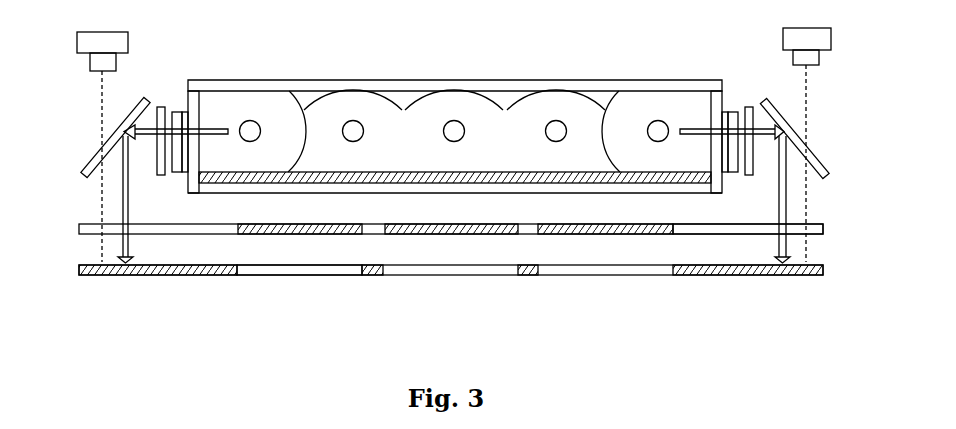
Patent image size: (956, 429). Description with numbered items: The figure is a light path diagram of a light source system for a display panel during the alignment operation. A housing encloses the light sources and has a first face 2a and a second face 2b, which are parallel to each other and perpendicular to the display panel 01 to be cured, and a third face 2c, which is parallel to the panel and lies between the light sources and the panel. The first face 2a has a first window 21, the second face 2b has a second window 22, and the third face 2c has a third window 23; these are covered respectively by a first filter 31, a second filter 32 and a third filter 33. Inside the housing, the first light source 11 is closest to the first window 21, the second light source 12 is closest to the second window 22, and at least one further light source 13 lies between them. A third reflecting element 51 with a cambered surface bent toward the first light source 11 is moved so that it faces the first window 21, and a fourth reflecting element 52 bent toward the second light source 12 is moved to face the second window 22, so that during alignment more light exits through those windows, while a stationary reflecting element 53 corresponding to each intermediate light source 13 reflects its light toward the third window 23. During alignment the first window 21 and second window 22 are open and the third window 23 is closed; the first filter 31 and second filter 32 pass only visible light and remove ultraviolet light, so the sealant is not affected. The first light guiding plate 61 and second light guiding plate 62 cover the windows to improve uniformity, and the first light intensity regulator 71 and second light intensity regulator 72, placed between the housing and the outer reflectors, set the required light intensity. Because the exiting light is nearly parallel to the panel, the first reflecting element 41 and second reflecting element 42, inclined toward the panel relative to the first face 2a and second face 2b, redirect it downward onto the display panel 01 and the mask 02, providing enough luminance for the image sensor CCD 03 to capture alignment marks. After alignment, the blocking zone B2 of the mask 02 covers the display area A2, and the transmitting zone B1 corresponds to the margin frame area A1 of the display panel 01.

The image sensor CCD 03 is at (88, 42).
The first face 2a is at (188, 100).
The second face 2b is at (722, 97).
The third face 2c is at (498, 183).
The first light source 11 is at (247, 124).
The second light source 12 is at (662, 125).
The light source 13 is at (555, 124).
The third reflecting element 51 is at (298, 88).
The fourth reflecting element 52 is at (615, 97).
The stationary reflecting element 53 is at (526, 97).
The first window 21 is at (193, 167).
The second window 22 is at (715, 150).
The third window 23 is at (549, 172).
The third filter 33 is at (441, 187).
The first filter 31 is at (183, 167).
The second filter 32 is at (724, 157).
The first light guiding plate 61 is at (173, 170).
The second light guiding plate 62 is at (731, 163).
The first light intensity regulator 71 is at (159, 175).
The second light intensity regulator 72 is at (752, 160).
The first reflecting element 41 is at (90, 163).
The second reflecting element 42 is at (817, 163).
The display panel to be cured 01 is at (451, 311).
The margin frame area A1 is at (217, 275).
The display area A2 is at (257, 275).
The mask 02 is at (451, 289).
The transmitting zone B1 is at (690, 232).
The blocking zone B2 is at (643, 234).